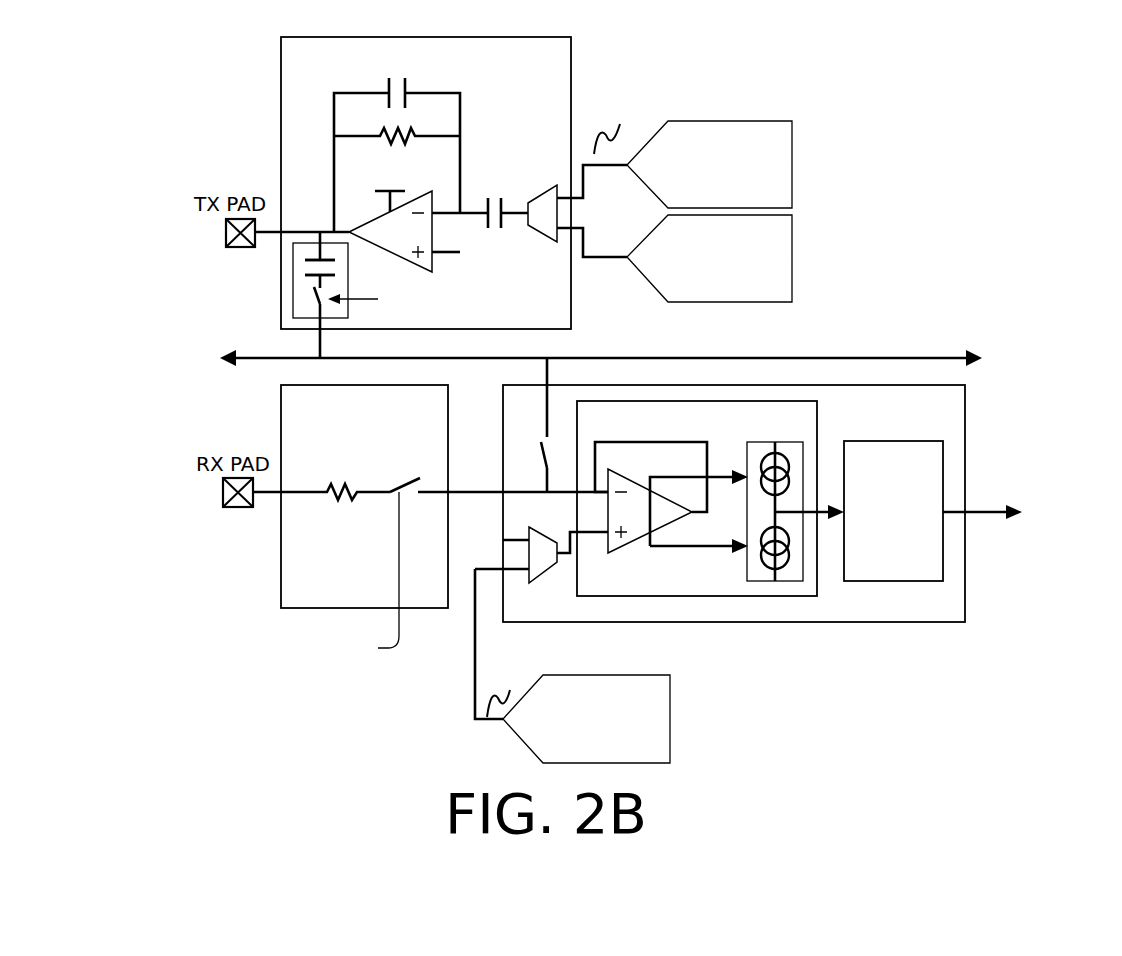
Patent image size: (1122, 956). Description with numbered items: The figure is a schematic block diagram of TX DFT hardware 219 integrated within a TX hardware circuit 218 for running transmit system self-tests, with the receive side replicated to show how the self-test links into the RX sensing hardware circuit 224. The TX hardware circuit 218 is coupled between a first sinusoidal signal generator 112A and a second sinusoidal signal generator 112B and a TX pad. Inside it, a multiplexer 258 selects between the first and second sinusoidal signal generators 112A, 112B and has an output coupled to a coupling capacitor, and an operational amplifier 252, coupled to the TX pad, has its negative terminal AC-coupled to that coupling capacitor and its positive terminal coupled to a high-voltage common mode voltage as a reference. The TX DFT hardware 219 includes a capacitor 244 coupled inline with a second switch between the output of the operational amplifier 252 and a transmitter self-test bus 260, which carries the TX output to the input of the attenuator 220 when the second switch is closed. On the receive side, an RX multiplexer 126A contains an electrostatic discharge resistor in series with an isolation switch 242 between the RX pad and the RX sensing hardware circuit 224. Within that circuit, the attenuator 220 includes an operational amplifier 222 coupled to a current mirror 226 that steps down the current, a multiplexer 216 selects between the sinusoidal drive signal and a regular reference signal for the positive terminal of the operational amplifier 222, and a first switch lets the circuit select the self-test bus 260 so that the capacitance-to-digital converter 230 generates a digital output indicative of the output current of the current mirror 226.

The TX hardware circuit 218 is at (414, 68).
The TX DFT hardware 219 is at (293, 264).
The capacitor 244 is at (305, 276).
The operational amplifier 252 is at (390, 255).
The multiplexer 258 is at (548, 194).
The transmitter self-test bus 260 is at (797, 358).
The first sinusoidal signal generator 112A is at (639, 442).
The second sinusoidal signal generator 112B is at (709, 258).
The RX multiplexer 126A is at (390, 417).
The isolation switch 242 is at (366, 576).
The RX sensing hardware circuit 224 is at (942, 421).
The attenuator 220 is at (708, 429).
The operational amplifier 222 is at (625, 548).
The multiplexer 216 is at (540, 578).
The current mirror 226 is at (780, 582).
The capacitance-to-digital converter 230 is at (875, 537).